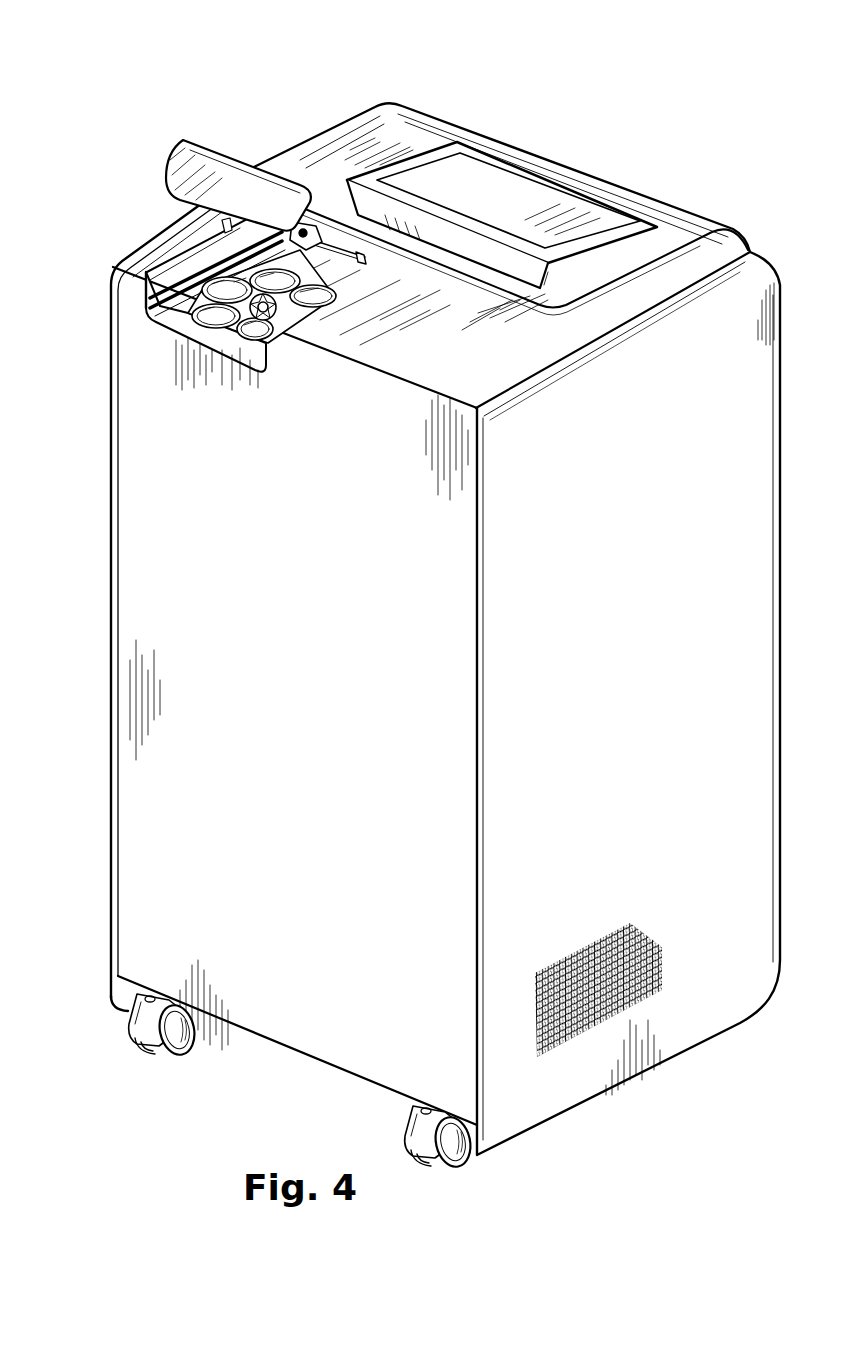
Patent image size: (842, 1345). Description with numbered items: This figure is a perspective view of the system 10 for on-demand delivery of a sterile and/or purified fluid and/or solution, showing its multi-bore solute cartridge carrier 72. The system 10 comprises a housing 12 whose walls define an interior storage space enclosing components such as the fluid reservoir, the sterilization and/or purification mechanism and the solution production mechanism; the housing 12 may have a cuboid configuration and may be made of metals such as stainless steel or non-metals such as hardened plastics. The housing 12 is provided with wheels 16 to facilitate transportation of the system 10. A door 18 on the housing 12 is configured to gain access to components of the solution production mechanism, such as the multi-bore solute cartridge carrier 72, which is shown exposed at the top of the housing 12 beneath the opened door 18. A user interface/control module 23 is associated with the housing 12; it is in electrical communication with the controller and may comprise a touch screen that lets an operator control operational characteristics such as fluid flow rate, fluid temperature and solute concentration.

The system 10 is at (409, 628).
The housing 12 is at (133, 708).
The wheels 16 is at (452, 1162).
The door 18 is at (214, 172).
The user interface/control module 23 is at (522, 207).
The multi-bore solute cartridge carrier 72 is at (200, 330).